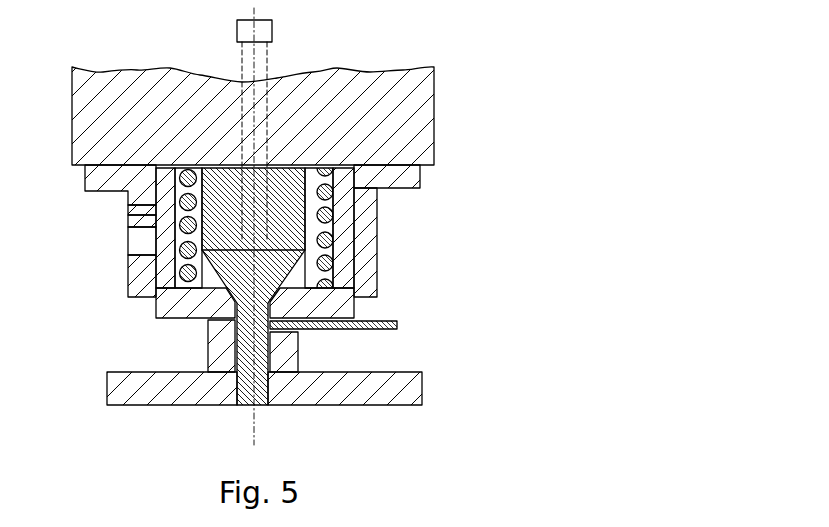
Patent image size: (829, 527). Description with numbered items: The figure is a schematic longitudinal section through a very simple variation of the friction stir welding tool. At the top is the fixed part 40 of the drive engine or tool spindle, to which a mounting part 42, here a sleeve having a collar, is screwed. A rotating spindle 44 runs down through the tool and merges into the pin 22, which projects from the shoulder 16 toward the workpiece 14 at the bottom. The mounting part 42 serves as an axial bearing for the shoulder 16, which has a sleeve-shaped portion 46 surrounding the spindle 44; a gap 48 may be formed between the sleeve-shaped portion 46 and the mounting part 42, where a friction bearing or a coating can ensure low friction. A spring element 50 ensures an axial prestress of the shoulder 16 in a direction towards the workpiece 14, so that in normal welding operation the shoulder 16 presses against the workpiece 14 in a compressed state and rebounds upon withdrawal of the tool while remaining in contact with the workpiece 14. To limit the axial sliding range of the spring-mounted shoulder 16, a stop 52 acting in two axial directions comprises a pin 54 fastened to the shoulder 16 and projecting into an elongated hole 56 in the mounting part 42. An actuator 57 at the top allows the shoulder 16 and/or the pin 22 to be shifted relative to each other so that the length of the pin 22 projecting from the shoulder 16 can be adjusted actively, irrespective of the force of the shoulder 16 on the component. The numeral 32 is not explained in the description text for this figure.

The workpiece 14 is at (407, 385).
The shoulder 16 is at (208, 337).
The pin 22 is at (262, 407).
The stripper plate 32 is at (398, 325).
The fixed part 40 is at (378, 84).
The mounting part 42 is at (405, 197).
The rotating spindle 44 is at (345, 229).
The sleeve-shaped portion 46 is at (372, 255).
The gap 48 is at (378, 296).
The spring element 50 is at (178, 275).
The stop 52 is at (128, 217).
The pin 54 is at (128, 214).
The elongated hole 56 is at (128, 251).
The actuator 57 is at (264, 32).